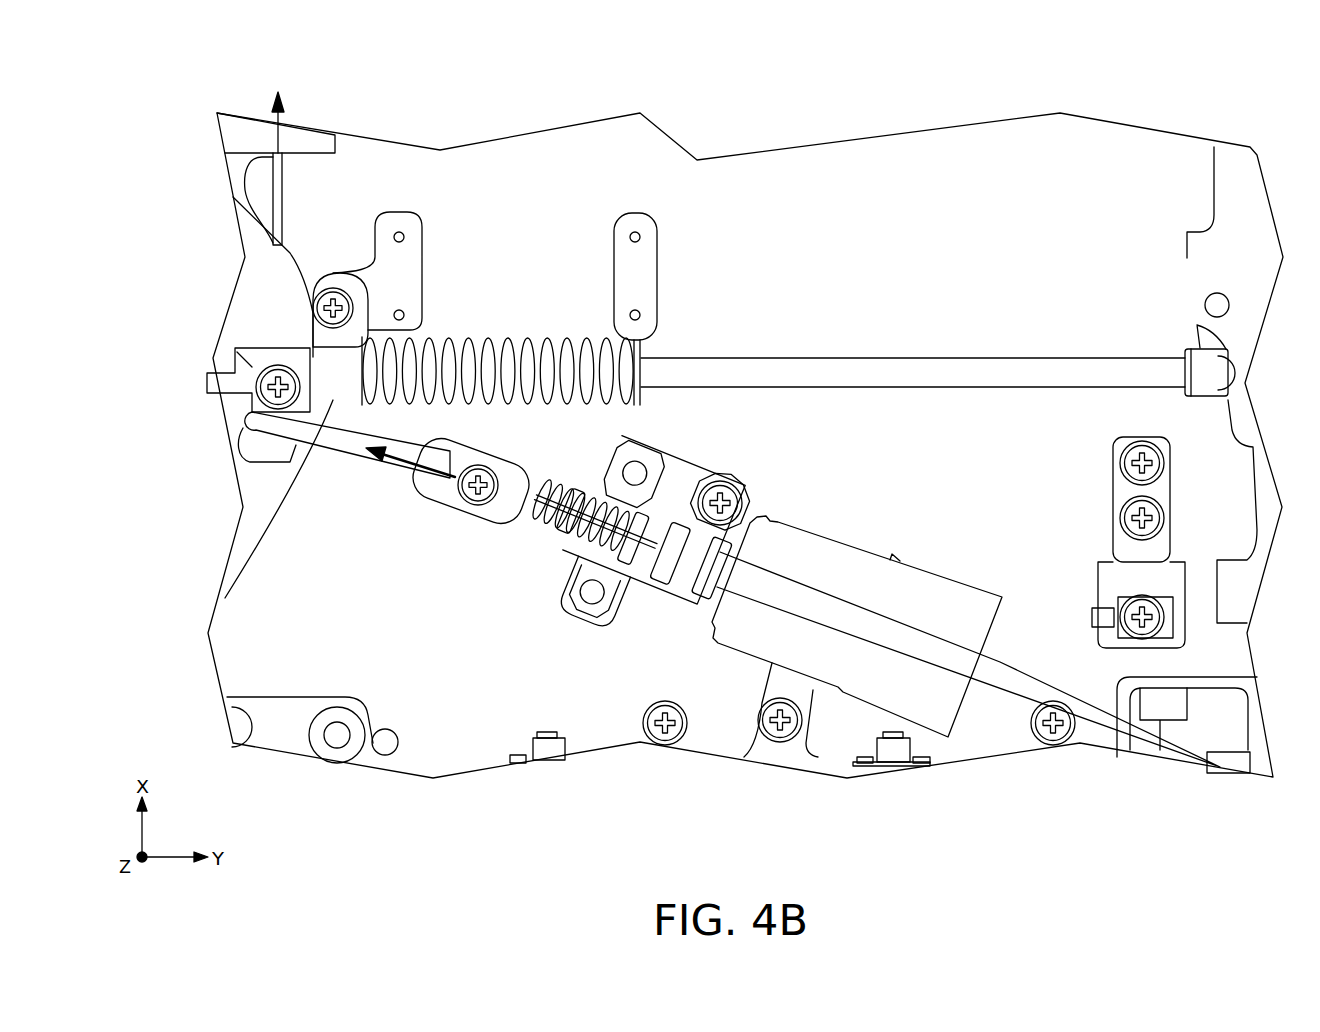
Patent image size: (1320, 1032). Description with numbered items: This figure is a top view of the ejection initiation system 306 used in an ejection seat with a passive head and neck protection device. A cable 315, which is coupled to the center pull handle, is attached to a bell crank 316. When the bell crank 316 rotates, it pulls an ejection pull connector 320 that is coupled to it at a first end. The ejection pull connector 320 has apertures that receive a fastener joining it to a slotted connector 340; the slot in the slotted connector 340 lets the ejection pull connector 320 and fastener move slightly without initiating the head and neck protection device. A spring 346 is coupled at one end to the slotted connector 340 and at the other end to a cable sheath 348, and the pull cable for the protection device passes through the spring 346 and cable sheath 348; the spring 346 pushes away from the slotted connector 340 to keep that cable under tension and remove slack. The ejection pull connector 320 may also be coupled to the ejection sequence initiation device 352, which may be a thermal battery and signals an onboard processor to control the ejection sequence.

The ejection initiation system 306 is at (430, 98).
The cable 315 is at (280, 143).
The bell crank 316 is at (245, 320).
The ejection pull connector 320 is at (357, 450).
The slotted connector 340 is at (467, 447).
The spring 346 is at (549, 517).
The cable sheath 348 is at (766, 574).
The ejection sequence initiation device 352 is at (928, 583).